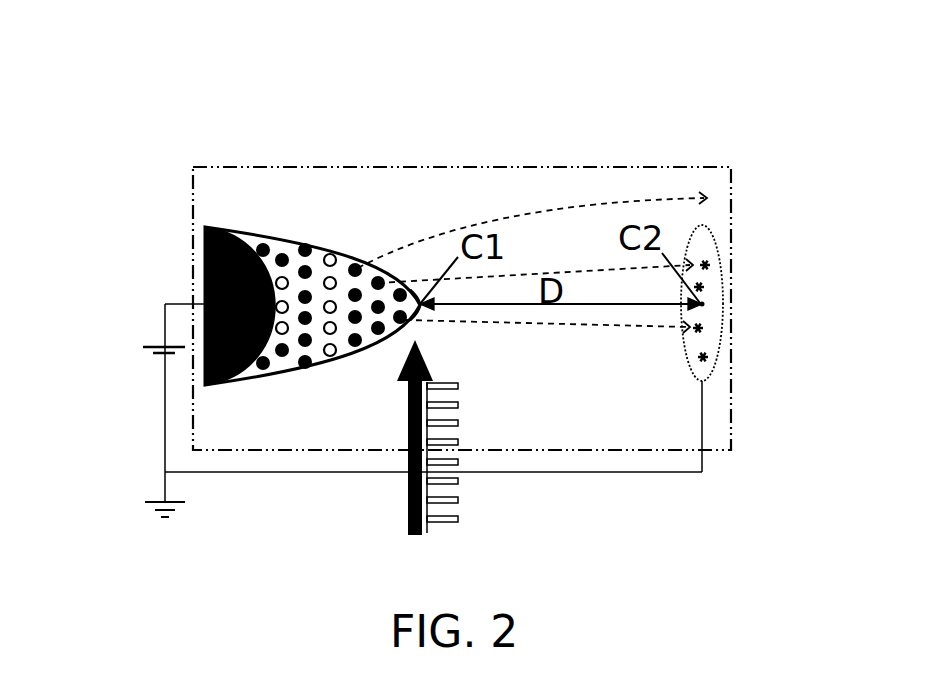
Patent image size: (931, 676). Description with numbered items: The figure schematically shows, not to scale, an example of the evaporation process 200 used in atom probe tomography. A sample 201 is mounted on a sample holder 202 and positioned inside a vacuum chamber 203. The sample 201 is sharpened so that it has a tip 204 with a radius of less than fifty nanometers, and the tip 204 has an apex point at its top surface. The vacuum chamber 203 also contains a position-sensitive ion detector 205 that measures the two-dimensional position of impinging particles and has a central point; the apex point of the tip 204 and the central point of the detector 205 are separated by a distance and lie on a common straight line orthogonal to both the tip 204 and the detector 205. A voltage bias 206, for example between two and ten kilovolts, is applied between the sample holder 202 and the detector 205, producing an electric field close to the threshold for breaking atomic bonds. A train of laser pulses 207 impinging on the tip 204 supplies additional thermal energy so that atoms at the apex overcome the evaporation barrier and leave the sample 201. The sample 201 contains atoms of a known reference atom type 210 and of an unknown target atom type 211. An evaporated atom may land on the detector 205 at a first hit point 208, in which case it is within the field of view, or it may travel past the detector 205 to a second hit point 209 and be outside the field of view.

The evaporation process 200 is at (168, 63).
The sample 201 is at (295, 390).
The sample holder 202 is at (205, 268).
The vacuum chamber 203 is at (193, 168).
The tip 204 is at (420, 305).
The detector 205 is at (723, 305).
The voltage bias 206 is at (142, 347).
The train of laser pulses 207 is at (428, 542).
The first hit point 208 is at (700, 330).
The second hit point 209 is at (710, 187).
The reference atom type 210 is at (265, 246).
The target atom type 211 is at (334, 255).